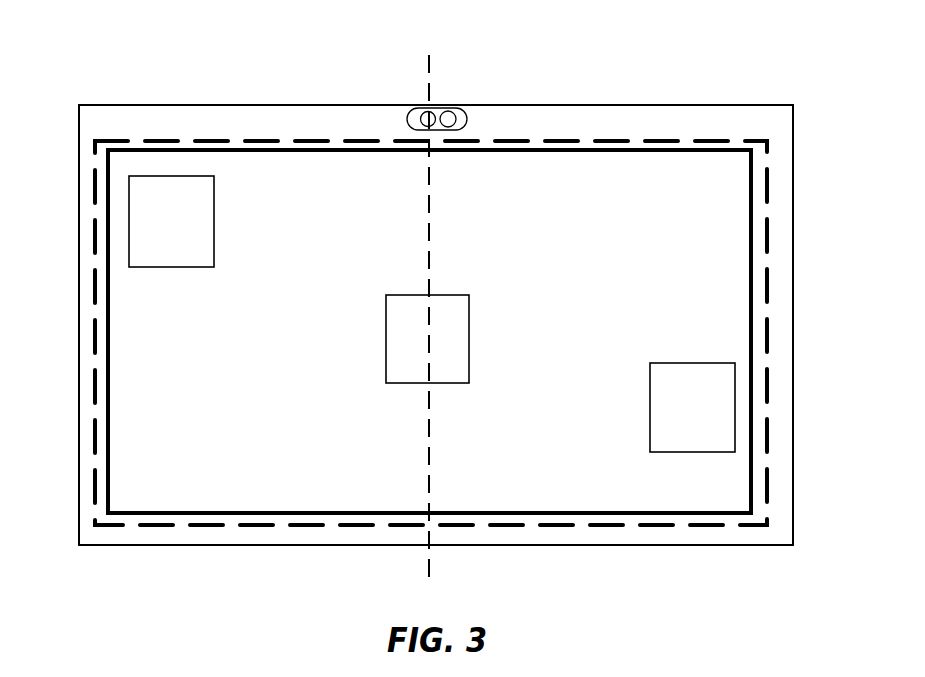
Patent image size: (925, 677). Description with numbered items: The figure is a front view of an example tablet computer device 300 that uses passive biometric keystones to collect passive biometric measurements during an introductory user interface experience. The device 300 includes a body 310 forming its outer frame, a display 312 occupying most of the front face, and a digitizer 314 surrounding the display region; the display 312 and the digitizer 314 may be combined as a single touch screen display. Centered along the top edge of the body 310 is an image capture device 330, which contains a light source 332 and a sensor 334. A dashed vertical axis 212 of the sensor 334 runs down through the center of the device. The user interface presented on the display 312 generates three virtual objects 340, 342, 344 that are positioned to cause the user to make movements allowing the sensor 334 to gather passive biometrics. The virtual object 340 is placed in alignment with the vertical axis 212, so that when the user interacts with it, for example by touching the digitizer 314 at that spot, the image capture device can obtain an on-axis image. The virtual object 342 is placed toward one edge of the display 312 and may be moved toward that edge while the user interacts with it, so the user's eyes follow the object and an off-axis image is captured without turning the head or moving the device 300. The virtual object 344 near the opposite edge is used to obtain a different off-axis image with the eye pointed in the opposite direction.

The device 300 is at (84, 98).
The body 310 is at (172, 105).
The digitizer 314 is at (258, 140).
The display 312 is at (682, 148).
The vertical axis 212 is at (428, 258).
The image capture device 330 is at (420, 112).
The sensor 334 is at (430, 115).
The light source 332 is at (455, 112).
The virtual object 342 is at (171, 221).
The virtual object 340 is at (427, 339).
The virtual object 344 is at (692, 407).